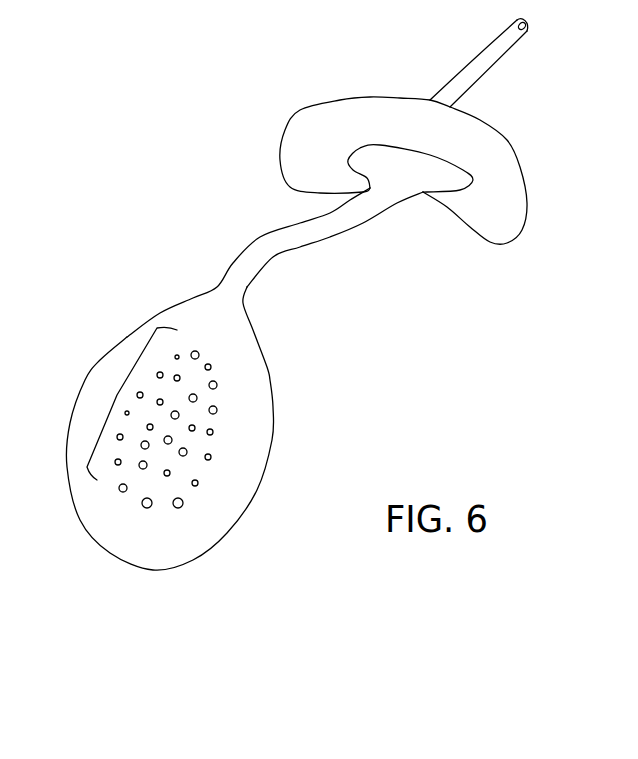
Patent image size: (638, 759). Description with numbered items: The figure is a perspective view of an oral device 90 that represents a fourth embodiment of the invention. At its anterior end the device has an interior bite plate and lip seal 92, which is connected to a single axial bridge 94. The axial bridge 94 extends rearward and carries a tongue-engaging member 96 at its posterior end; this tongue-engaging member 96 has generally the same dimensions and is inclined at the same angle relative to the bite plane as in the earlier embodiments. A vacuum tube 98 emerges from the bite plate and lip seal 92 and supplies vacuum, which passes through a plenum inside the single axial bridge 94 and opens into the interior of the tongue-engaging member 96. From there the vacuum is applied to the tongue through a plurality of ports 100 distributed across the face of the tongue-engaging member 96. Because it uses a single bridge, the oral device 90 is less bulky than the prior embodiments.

The oral device 90 is at (133, 216).
The interior bite plate and lip seal 92 is at (503, 162).
The single axial bridge 94 is at (323, 230).
The tongue-engaging member 96 is at (253, 377).
The vacuum tube 98 is at (478, 65).
The ports 100 is at (117, 395).